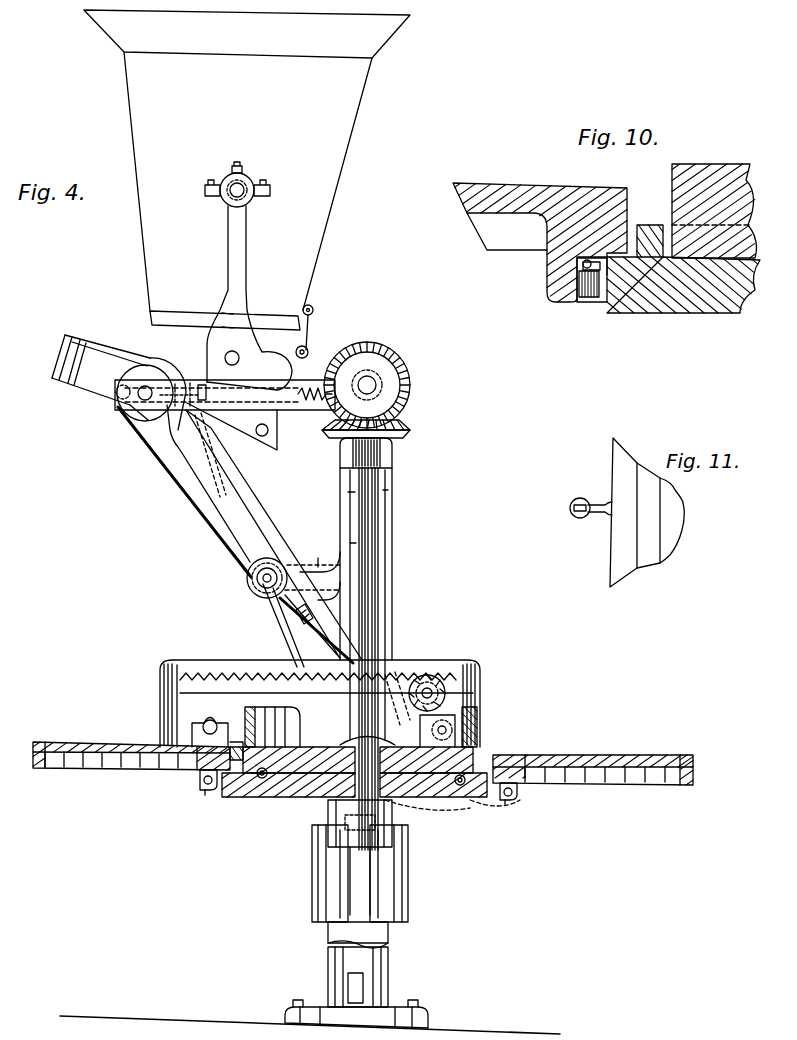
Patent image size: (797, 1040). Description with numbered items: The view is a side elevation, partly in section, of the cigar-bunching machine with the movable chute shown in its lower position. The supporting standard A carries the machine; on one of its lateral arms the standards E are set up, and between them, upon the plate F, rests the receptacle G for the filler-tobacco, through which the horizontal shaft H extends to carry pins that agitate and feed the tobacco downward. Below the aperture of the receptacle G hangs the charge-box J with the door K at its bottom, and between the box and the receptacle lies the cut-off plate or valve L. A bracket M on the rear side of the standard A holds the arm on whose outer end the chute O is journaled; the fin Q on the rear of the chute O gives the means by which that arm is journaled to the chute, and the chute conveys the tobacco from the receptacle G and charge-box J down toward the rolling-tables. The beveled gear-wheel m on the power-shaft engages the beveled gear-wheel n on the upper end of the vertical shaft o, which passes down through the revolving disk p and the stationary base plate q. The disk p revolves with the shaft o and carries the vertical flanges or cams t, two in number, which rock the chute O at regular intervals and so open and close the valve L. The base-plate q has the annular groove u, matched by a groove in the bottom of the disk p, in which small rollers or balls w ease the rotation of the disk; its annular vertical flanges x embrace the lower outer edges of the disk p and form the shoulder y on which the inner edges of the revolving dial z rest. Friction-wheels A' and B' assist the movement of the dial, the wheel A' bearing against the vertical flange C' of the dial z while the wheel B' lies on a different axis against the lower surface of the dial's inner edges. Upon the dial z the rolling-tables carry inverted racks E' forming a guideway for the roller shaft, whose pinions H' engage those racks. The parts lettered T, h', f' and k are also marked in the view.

In FIG. 4, the receptacle G is at (247, 184).
In FIG. 4, the horizontal shaft H is at (237, 188).
In FIG. 4, the standards E is at (249, 298).
In FIG. 4, the pivot T is at (227, 353).
In FIG. 4, the cut-off plate or valve L is at (225, 396).
In FIG. 4, the charge-box J is at (232, 426).
In FIG. 4, the door K is at (210, 455).
In FIG. 4, the beveled gear-wheel m is at (371, 385).
In FIG. 4, the beveled gear-wheel n is at (370, 429).
In FIG. 4, the supporting standard A is at (372, 644).
In FIG. 4, the vertical shaft o is at (349, 544).
In FIG. 4, the chute O is at (274, 535).
In FIG. 4, the pulley h' is at (267, 570).
In FIG. 4, the bracket M is at (312, 569).
In FIG. 4, the link f' is at (283, 625).
In FIG. 4, the fin Q is at (300, 610).
In FIG. 4, the inverted racks E' is at (320, 703).
In FIG. 4, the plate F is at (397, 698).
In FIG. 4, the pinions H' is at (431, 707).
In FIG. 10, the pinions H' is at (589, 296).
In FIG. 11, the pinions H' is at (591, 516).
In FIG. 4, the vertical flange t is at (485, 716).
In FIG. 4, the bracket k is at (241, 733).
In FIG. 4, the rollers or balls w is at (258, 798).
In FIG. 4, the annular groove u is at (427, 809).
In FIG. 4, the shoulder y is at (495, 811).
In FIG. 10, the shoulder y is at (615, 266).
In FIG. 11, the shoulder y is at (623, 512).
In FIG. 4, the base plate q is at (424, 797).
In FIG. 10, the base plate q is at (698, 310).
In FIG. 11, the base plate q is at (672, 520).
In FIG. 4, the revolving dial z is at (570, 755).
In FIG. 10, the revolving dial z is at (494, 186).
In FIG. 4, the annular vertical flanges x is at (236, 745).
In FIG. 10, the annular vertical flanges x is at (650, 234).
In FIG. 11, the annular vertical flanges x is at (648, 515).
In FIG. 4, the friction-wheel B' is at (363, 785).
In FIG. 10, the friction-wheel B' is at (564, 280).
In FIG. 11, the friction-wheel B' is at (592, 492).
In FIG. 4, the friction-wheel A' is at (369, 792).
In FIG. 4, the vertical flange C' is at (377, 797).
In FIG. 10, the vertical flange C' is at (555, 307).
In FIG. 10, the revolving disk p is at (752, 196).